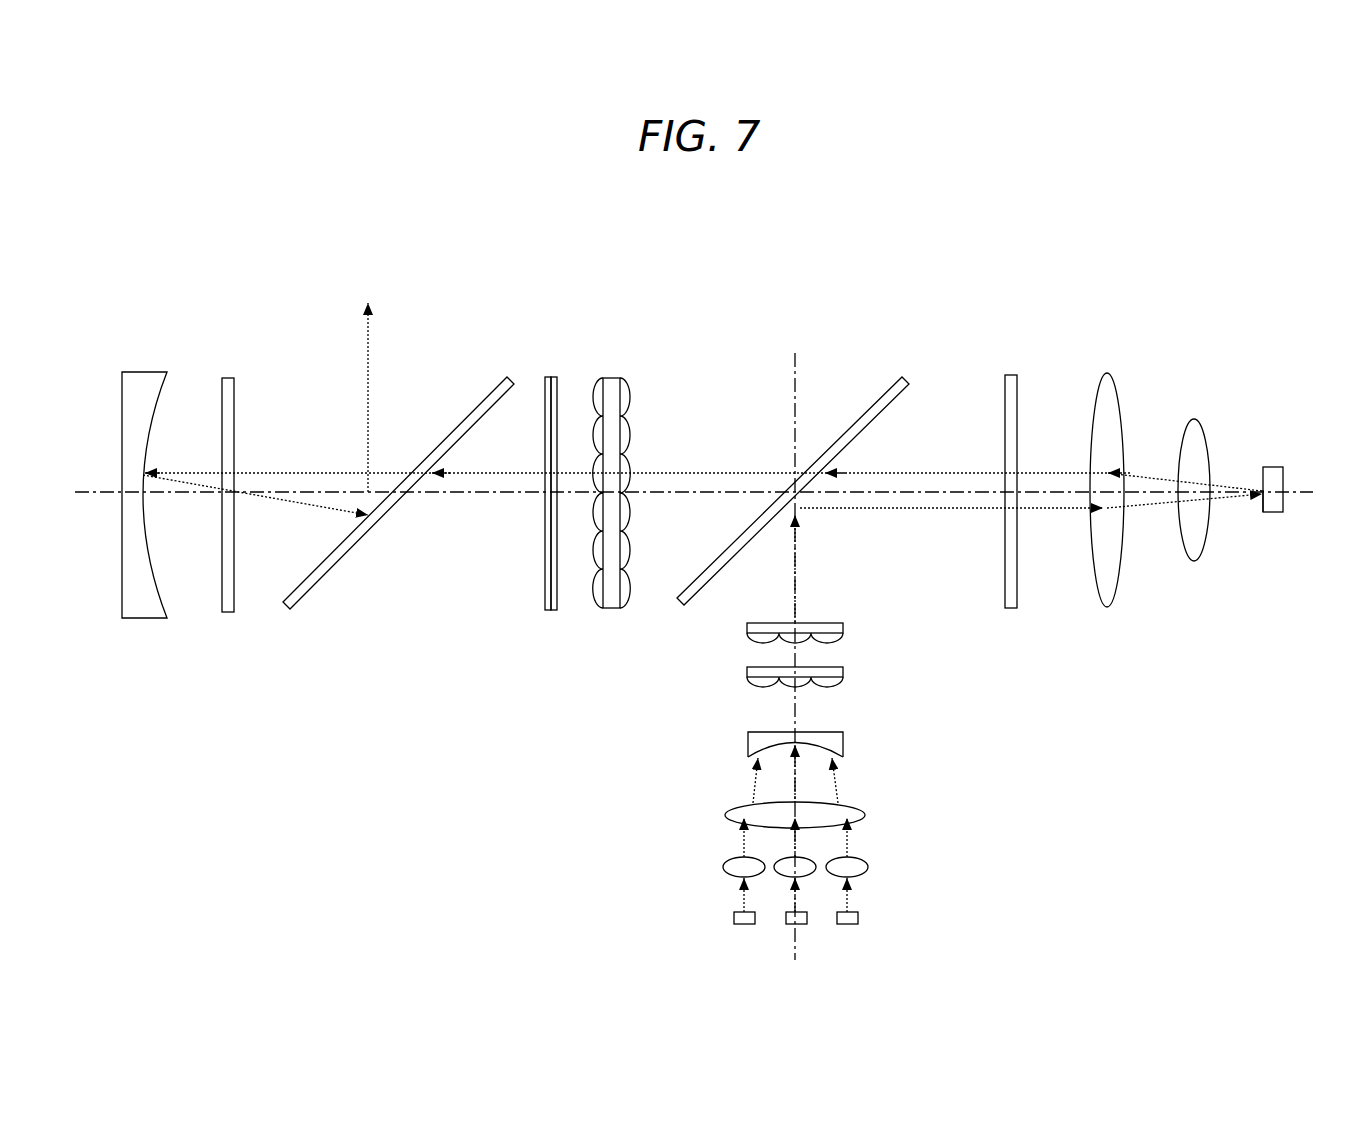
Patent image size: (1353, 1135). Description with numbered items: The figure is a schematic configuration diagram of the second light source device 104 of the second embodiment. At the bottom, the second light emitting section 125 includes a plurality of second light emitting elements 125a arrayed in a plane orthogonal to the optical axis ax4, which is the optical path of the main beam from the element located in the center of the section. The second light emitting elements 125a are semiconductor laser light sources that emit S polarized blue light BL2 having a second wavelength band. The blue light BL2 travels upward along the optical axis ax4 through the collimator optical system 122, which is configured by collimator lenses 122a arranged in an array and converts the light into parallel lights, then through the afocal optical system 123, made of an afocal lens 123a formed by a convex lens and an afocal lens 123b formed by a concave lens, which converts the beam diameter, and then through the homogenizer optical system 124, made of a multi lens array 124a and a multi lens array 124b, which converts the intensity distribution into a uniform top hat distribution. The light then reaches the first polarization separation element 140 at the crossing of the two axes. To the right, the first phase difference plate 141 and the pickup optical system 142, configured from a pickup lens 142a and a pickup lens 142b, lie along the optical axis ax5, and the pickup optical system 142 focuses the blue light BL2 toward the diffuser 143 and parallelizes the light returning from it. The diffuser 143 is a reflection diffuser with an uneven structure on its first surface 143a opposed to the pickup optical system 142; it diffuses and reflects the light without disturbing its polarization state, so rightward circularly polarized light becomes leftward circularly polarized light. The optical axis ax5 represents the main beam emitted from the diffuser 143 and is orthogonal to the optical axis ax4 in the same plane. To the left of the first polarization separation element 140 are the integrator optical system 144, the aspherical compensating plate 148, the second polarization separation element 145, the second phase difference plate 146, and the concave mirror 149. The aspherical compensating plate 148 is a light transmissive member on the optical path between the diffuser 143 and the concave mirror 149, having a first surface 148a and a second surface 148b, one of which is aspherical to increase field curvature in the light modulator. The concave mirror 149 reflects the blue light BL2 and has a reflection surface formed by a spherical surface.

The second light source device 104 is at (803, 288).
The collimator optical system 122 is at (812, 872).
The collimator lens 122a is at (724, 864).
The afocal optical system 123 is at (885, 780).
The afocal lens 123a is at (867, 803).
The afocal lens 123b is at (837, 743).
The homogenizer optical system 124 is at (896, 670).
The multi lens array 124a is at (843, 680).
The multi lens array 124b is at (843, 635).
The second light emitting section 125 is at (844, 950).
The second light emitting element 125a is at (786, 918).
The first polarization separation element 140 is at (878, 407).
The first phase difference plate 141 is at (1010, 375).
The pickup optical system 142 is at (1150, 424).
The pickup lens 142a is at (1108, 375).
The pickup lens 142b is at (1193, 420).
The diffuser 143 is at (1256, 499).
The first surface 143a is at (1255, 508).
The integrator optical system 144 is at (608, 380).
The second polarization separation element 145 is at (482, 408).
The second phase difference plate 146 is at (230, 378).
The aspherical compensating plate 148 is at (551, 496).
The first surface 148a is at (545, 585).
The second surface 148b is at (557, 585).
The concave mirror 149 is at (138, 375).
The blue light BL2 is at (690, 472).
The optical axis ax4 is at (800, 948).
The optical axis ax5 is at (1305, 493).